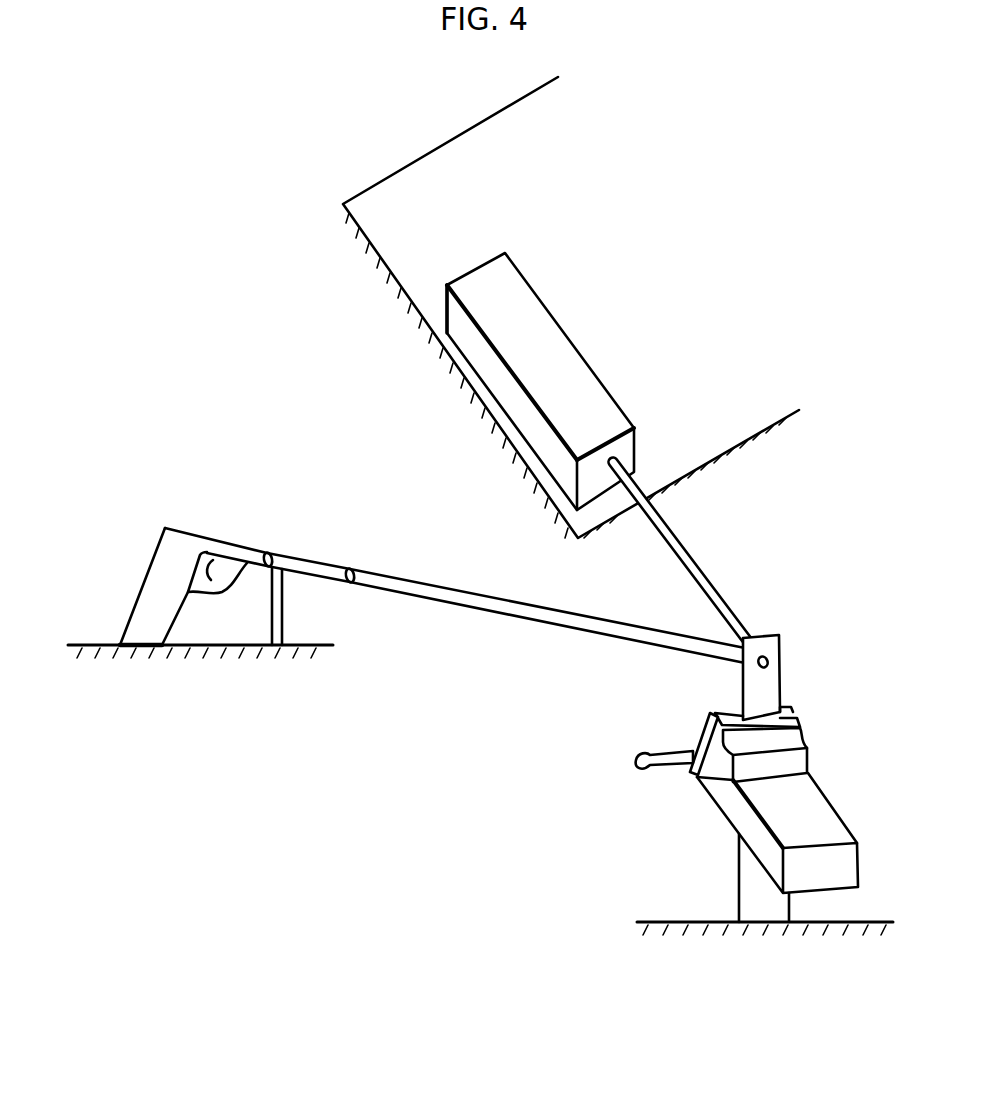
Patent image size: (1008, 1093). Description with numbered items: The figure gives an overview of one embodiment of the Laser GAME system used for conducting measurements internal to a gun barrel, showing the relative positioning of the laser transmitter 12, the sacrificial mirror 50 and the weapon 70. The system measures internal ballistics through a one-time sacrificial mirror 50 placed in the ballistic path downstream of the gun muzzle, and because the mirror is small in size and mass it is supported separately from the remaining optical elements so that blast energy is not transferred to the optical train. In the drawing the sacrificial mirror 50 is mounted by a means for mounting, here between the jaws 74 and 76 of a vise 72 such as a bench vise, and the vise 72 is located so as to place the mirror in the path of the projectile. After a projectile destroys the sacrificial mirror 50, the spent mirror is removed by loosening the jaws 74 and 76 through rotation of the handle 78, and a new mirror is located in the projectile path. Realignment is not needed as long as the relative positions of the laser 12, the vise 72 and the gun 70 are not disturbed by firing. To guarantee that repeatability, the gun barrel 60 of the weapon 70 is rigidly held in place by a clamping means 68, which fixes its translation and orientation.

The laser transmitter 12 is at (572, 360).
The sacrificial mirror 50 is at (772, 687).
The gun barrel 60 is at (302, 553).
The clamping means 68 is at (287, 617).
The weapon 70 is at (152, 560).
The vise 72 is at (850, 860).
The jaw 74 is at (802, 720).
The jaw 76 is at (727, 712).
The handle 78 is at (652, 780).